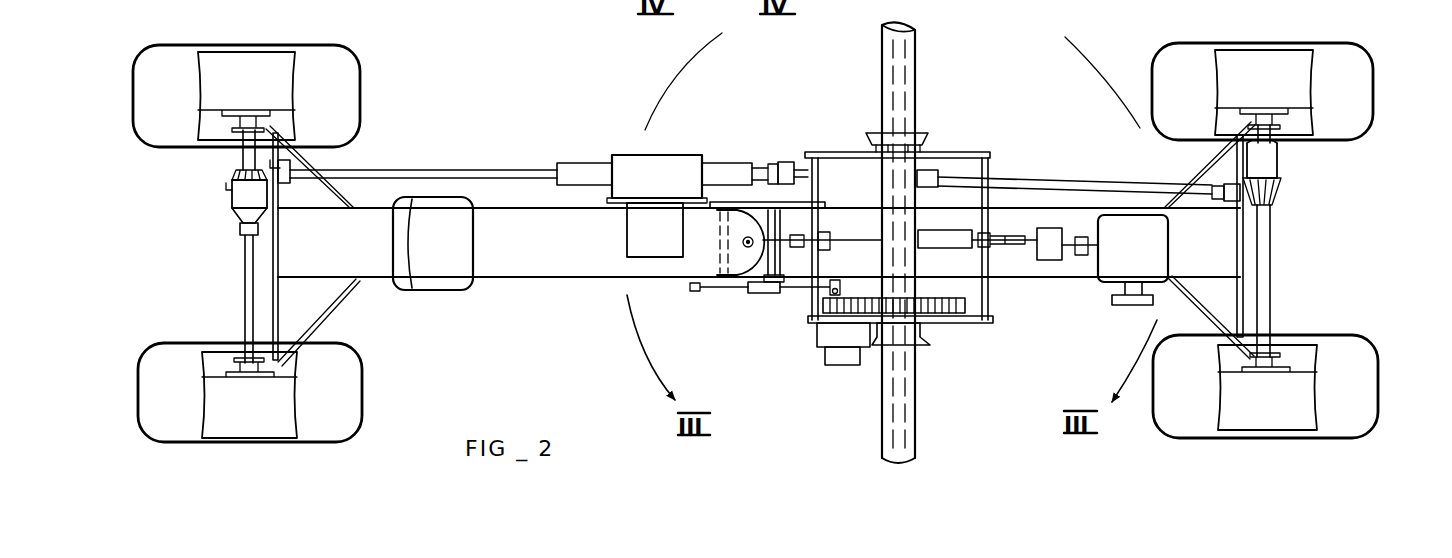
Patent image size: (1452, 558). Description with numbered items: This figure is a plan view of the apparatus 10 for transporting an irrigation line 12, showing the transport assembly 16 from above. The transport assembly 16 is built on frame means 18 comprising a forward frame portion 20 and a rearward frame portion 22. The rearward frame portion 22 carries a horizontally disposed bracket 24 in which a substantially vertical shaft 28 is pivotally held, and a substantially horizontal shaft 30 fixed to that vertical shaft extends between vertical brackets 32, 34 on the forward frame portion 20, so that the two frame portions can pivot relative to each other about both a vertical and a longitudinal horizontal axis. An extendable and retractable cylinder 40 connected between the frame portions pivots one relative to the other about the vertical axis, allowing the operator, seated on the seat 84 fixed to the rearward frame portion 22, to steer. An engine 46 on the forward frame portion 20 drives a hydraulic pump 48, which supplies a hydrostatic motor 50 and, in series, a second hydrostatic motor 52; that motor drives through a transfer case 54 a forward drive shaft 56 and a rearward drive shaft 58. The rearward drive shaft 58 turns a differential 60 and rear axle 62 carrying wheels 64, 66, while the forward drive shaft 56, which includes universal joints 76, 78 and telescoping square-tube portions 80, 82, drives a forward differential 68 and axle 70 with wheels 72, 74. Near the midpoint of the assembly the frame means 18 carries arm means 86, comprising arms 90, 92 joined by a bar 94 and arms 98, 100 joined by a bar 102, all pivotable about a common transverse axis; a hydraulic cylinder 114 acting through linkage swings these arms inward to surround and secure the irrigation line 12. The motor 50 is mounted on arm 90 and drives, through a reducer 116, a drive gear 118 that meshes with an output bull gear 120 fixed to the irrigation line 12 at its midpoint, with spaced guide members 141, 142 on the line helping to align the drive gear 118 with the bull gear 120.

The apparatus 10 is at (558, 132).
The irrigation line 12 is at (916, 85).
The transport assembly 16 is at (528, 293).
The frame means 18 is at (578, 282).
The forward frame portion 20 is at (1207, 254).
The rearward frame portion 22 is at (543, 257).
The bracket 24 is at (735, 208).
The substantially vertical shaft 28 is at (735, 300).
The substantially horizontally disposed shaft 30 is at (760, 185).
The vertical bracket 32 is at (705, 298).
The vertical bracket 34 is at (767, 296).
The extendable and retractable cylinder 40 is at (755, 298).
The engine 46 is at (1147, 261).
The hydraulic pump 48 is at (1050, 252).
The hydrostatic motor 50 is at (855, 368).
The hydrostatic motor 52 is at (665, 232).
The transfer case 54 is at (640, 168).
The forward drive shaft 56 is at (1067, 181).
The rearward drive shaft 58 is at (486, 168).
The differential 60 is at (235, 186).
The rear axle 62 is at (243, 268).
The wheel 64 is at (360, 82).
The wheel 66 is at (362, 367).
The forward differential 68 is at (1283, 183).
The axle 70 is at (1274, 256).
The wheel 72 is at (1373, 133).
The wheel 74 is at (1370, 335).
The universal joint 76 is at (790, 160).
The universal joint 78 is at (1212, 188).
The shaft portion 80 is at (940, 162).
The shaft portion 82 is at (1100, 183).
The seat 84 is at (453, 257).
The arm means 86 is at (926, 330).
The arm 90 is at (813, 316).
The arm 92 is at (826, 152).
The bar 94 is at (820, 253).
The arm 98 is at (985, 322).
The arm 100 is at (990, 152).
The bar 102 is at (984, 246).
The hydraulic cylinder 114 is at (960, 244).
The reducer 116 is at (840, 336).
The drive gear 118 is at (825, 322).
The output bull gear 120 is at (966, 312).
The guide member 141 is at (916, 350).
The guide member 142 is at (932, 128).